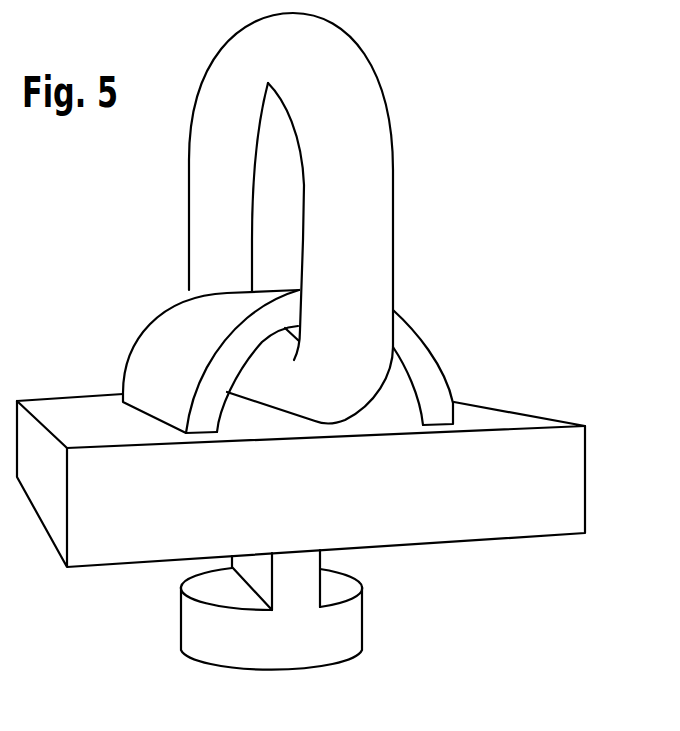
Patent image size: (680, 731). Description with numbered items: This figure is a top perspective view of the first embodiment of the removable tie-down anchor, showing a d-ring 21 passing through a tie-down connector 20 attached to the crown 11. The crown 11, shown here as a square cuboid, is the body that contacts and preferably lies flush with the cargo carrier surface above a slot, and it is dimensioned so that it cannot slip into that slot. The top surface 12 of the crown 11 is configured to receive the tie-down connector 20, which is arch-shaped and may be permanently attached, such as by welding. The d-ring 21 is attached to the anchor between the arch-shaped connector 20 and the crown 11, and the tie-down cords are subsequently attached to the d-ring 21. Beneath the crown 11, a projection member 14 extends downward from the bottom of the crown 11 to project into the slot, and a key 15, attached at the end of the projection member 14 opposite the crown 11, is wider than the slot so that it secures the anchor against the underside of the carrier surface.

The crown 11 is at (583, 477).
The top surface 12 is at (121, 434).
The projection member 14 is at (320, 561).
The key 15 is at (187, 617).
The tie-down connector 20 is at (430, 342).
The d-ring 21 is at (380, 103).